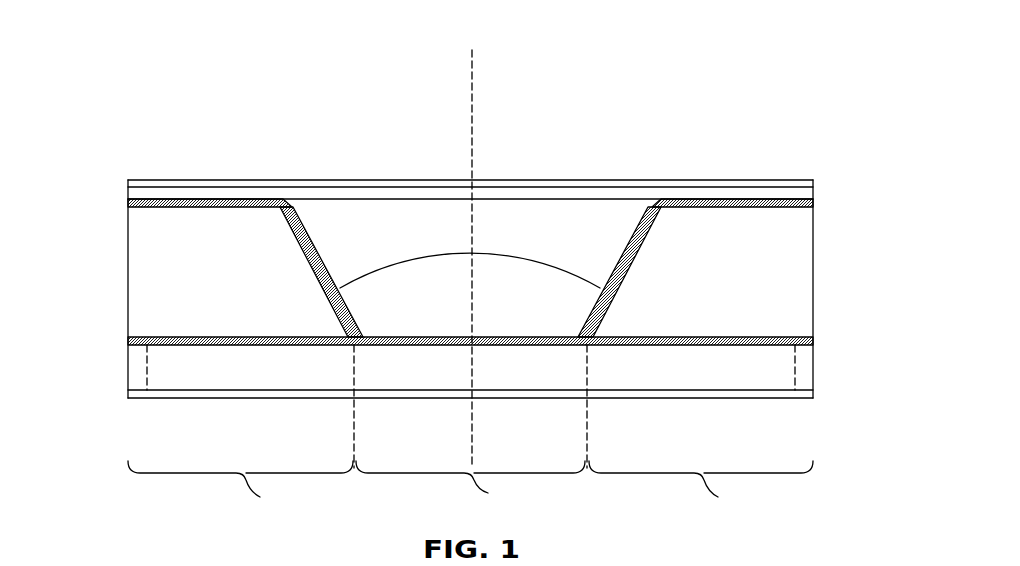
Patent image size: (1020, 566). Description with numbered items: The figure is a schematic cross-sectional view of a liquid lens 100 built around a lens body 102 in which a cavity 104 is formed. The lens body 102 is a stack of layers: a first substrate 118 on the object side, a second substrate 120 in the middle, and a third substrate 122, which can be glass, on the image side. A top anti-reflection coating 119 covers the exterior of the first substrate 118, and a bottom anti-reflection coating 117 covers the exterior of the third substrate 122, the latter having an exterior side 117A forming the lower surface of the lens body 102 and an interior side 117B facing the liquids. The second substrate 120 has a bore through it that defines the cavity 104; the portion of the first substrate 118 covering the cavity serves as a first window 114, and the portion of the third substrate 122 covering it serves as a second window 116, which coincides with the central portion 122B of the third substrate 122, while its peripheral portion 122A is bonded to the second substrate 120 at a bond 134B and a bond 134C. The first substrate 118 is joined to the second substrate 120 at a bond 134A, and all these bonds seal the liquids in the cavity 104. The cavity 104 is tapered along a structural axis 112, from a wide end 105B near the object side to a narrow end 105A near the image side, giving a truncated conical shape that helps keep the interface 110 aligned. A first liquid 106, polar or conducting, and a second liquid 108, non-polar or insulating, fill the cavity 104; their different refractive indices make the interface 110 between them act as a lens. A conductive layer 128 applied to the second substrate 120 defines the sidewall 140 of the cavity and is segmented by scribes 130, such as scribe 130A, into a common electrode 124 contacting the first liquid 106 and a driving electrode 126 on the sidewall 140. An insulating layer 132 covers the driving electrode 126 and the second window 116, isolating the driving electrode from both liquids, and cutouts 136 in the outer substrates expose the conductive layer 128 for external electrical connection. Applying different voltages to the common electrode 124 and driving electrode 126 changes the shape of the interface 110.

The liquid lens 100 is at (700, 62).
The lens body 102 is at (100, 180).
The cavity 104 is at (605, 222).
The narrow end 105A is at (353, 343).
The wide end 105B is at (293, 200).
The first liquid 106 is at (575, 225).
The second liquid 108 is at (457, 318).
The interface 110 is at (437, 257).
The structural axis 112 is at (472, 57).
The first window 114 is at (508, 192).
The second window 116 is at (490, 363).
The bottom anti-reflection coating 117 is at (602, 393).
The exterior side 117A is at (657, 400).
The interior side 117B is at (620, 388).
The first substrate 118 is at (795, 194).
The top anti-reflection coating 119 is at (282, 187).
The second substrate 120 is at (790, 297).
The third substrate 122 is at (708, 363).
The peripheral portion 122A is at (470, 493).
The central portion 122B is at (470, 492).
The common electrode 124 is at (142, 200).
The driving electrode 126 is at (293, 235).
The conductive layer 128 is at (215, 343).
The scribes 130 is at (663, 208).
The scribe 130A is at (280, 208).
The insulating layer 132 is at (357, 340).
The bond 134A is at (787, 200).
The bond 134B is at (668, 343).
The bond 134C is at (755, 345).
The cutouts 136 is at (137, 367).
The sidewall 140 is at (323, 257).